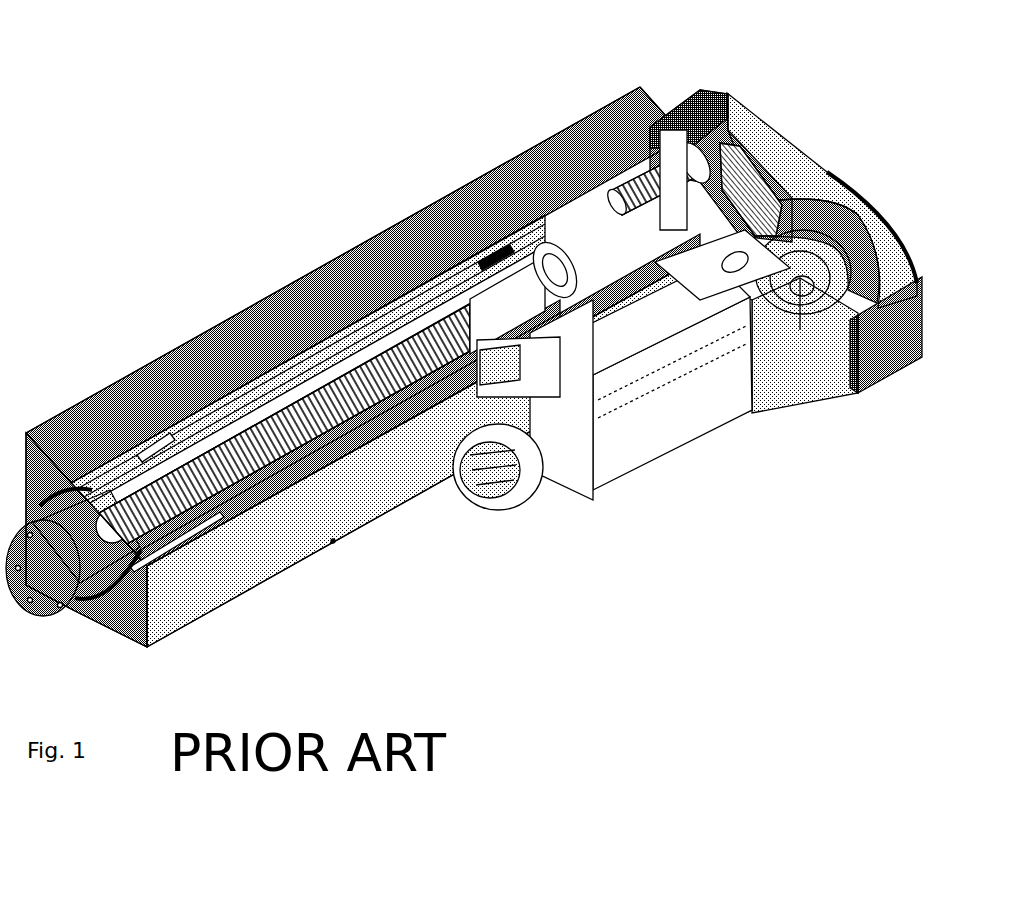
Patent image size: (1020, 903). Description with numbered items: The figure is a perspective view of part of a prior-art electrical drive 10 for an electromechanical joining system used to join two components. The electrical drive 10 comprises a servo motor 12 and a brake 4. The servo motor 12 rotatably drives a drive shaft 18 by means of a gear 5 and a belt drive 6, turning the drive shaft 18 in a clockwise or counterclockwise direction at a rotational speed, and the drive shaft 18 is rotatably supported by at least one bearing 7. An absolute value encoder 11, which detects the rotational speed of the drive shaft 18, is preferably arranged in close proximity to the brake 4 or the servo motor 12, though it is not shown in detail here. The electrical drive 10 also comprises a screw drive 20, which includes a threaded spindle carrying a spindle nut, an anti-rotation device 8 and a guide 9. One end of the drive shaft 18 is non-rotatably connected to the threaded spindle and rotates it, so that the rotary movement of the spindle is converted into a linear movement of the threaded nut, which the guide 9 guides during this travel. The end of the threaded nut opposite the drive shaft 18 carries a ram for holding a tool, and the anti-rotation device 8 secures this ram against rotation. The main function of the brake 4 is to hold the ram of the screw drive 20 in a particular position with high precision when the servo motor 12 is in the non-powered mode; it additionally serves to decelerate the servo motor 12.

The brake 4 is at (520, 477).
The gear 5 is at (835, 385).
The belt drive 6 is at (775, 158).
The bearing 7 is at (603, 240).
The anti-rotation device 8 is at (153, 447).
The guide 9 is at (113, 483).
The electrical drive 10 is at (122, 176).
The absolute value encoder 11 is at (760, 102).
The servo motor 12 is at (665, 427).
The drive shaft 18 is at (640, 170).
The screw drive 20 is at (412, 340).